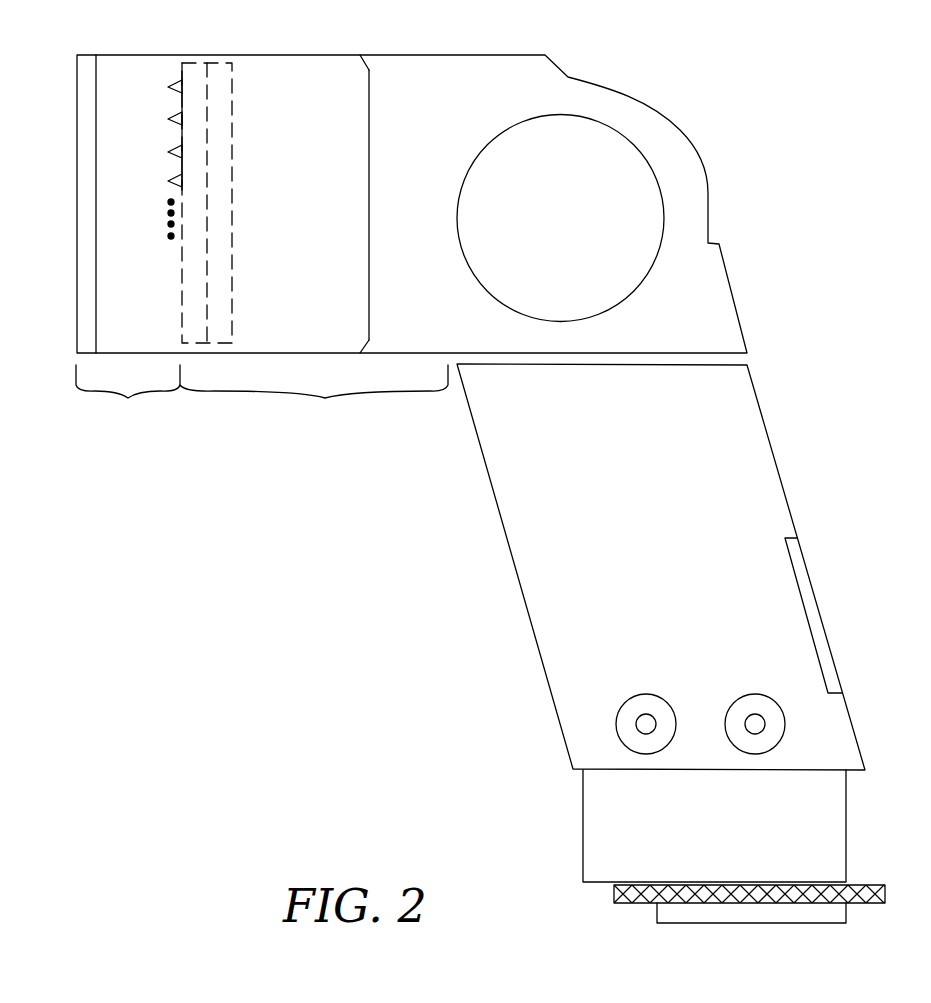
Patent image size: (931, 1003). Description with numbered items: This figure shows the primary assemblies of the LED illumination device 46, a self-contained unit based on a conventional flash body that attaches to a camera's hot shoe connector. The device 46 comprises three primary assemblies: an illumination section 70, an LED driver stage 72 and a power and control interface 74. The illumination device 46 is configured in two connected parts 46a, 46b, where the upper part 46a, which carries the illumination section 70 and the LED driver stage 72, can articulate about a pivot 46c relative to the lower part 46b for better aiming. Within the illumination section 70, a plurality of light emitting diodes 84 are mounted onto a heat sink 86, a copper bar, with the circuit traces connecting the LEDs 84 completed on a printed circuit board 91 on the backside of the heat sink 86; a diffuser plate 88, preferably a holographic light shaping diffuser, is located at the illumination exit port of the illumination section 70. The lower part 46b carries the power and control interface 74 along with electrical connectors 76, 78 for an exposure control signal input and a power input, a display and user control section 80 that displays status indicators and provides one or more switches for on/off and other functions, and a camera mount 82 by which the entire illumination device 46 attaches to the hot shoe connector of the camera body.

The illumination device 46 is at (745, 143).
The upper part 46a is at (456, 73).
The lower part 46b is at (725, 460).
The pivot 46c is at (495, 266).
The illumination section 70 is at (128, 399).
The LED driver stage 72 is at (314, 399).
The power and control interface 74 is at (677, 543).
The electrical connector 76 is at (634, 696).
The electrical connector 78 is at (746, 696).
The display and user control section 80 is at (817, 605).
The camera mount 82 is at (614, 893).
The light emitting diodes 84 is at (170, 82).
The heat sink 86 is at (197, 278).
The diffuser plate 88 is at (88, 233).
The printed circuit board 91 is at (236, 72).